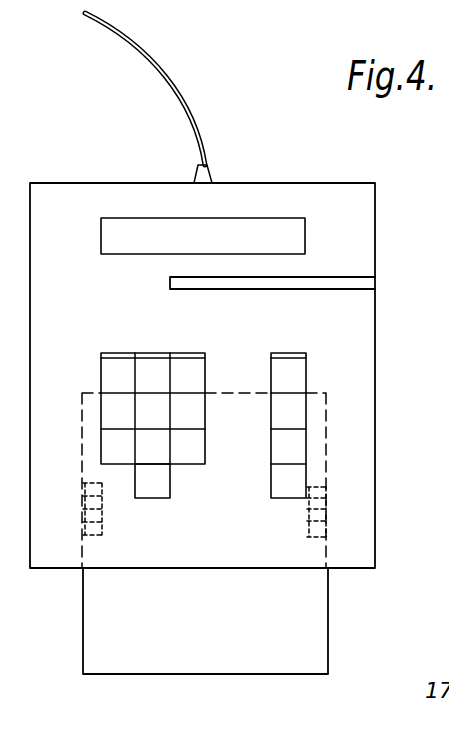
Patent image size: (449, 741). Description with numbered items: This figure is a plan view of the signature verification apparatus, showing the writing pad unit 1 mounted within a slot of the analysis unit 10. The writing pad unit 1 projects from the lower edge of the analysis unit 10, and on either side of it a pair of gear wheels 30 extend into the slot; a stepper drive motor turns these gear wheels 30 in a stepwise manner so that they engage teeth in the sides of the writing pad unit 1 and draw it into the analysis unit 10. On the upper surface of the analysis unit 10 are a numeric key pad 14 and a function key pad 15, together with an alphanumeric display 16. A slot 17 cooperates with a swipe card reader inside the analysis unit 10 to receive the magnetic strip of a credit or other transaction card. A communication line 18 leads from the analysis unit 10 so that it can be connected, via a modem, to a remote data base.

The writing pad unit 1 is at (303, 665).
The analysis unit 10 is at (365, 419).
The numeric key pad 14 is at (114, 370).
The function key pad 15 is at (306, 368).
The alphanumeric display 16 is at (305, 239).
The slot 17 is at (362, 282).
The communication line 18 is at (202, 128).
The gear wheels 30 is at (85, 533).